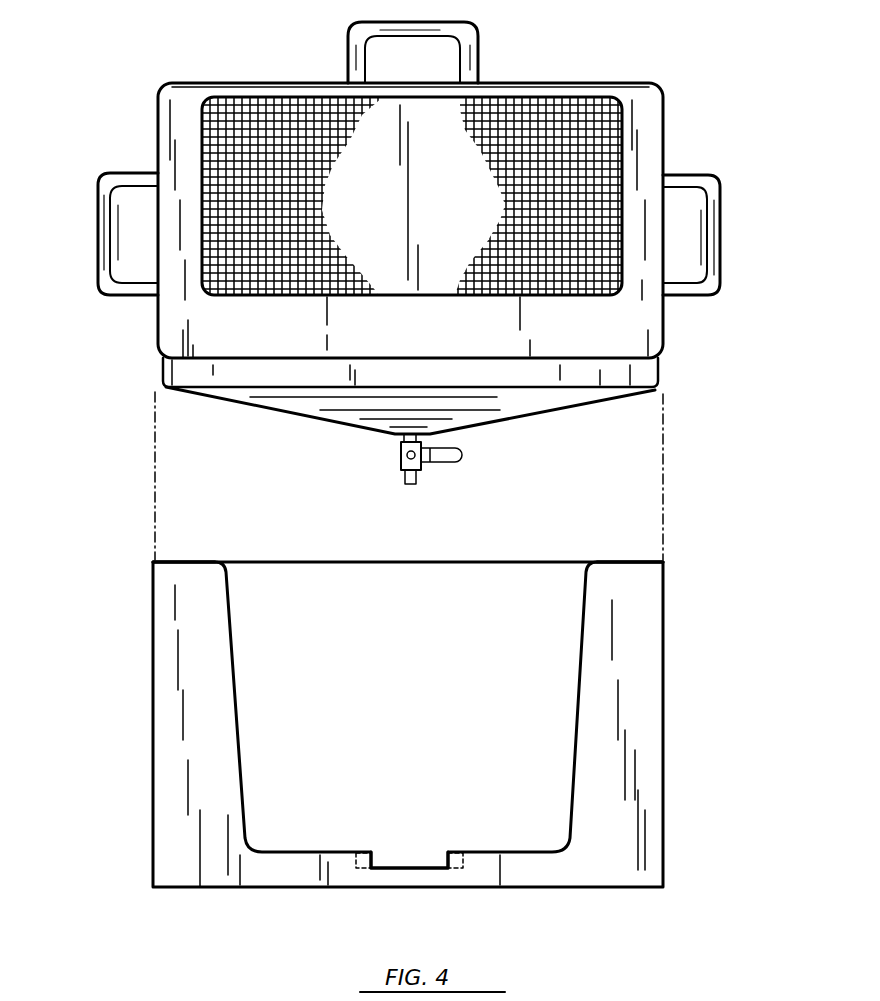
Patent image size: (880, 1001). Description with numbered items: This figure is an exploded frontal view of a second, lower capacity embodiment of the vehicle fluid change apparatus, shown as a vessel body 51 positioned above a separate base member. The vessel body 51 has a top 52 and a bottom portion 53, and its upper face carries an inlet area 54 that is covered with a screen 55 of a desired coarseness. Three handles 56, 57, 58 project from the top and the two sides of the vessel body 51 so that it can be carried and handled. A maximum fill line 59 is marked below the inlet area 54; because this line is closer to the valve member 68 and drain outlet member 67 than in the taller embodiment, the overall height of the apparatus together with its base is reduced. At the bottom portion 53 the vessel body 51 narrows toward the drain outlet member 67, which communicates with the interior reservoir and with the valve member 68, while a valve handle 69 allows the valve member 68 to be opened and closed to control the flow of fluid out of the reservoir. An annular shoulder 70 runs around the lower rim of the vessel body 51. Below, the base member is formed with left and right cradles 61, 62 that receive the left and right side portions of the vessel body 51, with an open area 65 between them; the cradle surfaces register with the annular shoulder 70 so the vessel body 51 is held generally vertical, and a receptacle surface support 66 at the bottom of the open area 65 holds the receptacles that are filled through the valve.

The vessel body 51 is at (663, 100).
The top 52 is at (567, 83).
The bottom portion 53 is at (492, 412).
The inlet area 54 is at (263, 120).
The screen 55 is at (463, 275).
The handle 56 is at (98, 245).
The handle 57 is at (455, 22).
The handle 58 is at (719, 185).
The maximum fill line 59 is at (255, 297).
The left cradle 61 is at (185, 560).
The right cradle 62 is at (612, 562).
The open area 65 is at (526, 668).
The receptacle surface support 66 is at (395, 862).
The drain outlet member 67 is at (398, 437).
The valve member 68 is at (400, 470).
The valve handle 69 is at (455, 462).
The annular shoulder 70 is at (185, 365).